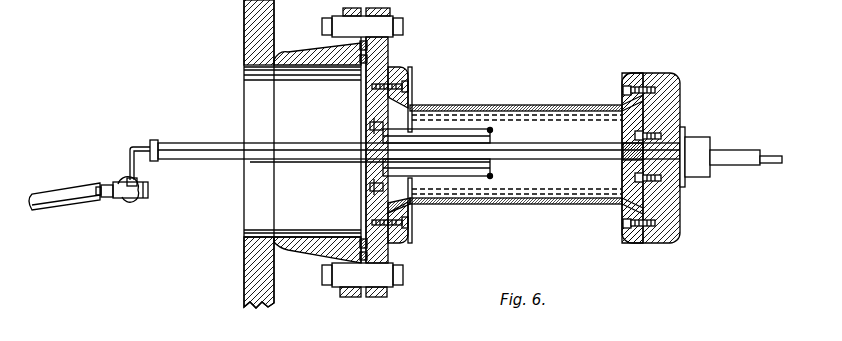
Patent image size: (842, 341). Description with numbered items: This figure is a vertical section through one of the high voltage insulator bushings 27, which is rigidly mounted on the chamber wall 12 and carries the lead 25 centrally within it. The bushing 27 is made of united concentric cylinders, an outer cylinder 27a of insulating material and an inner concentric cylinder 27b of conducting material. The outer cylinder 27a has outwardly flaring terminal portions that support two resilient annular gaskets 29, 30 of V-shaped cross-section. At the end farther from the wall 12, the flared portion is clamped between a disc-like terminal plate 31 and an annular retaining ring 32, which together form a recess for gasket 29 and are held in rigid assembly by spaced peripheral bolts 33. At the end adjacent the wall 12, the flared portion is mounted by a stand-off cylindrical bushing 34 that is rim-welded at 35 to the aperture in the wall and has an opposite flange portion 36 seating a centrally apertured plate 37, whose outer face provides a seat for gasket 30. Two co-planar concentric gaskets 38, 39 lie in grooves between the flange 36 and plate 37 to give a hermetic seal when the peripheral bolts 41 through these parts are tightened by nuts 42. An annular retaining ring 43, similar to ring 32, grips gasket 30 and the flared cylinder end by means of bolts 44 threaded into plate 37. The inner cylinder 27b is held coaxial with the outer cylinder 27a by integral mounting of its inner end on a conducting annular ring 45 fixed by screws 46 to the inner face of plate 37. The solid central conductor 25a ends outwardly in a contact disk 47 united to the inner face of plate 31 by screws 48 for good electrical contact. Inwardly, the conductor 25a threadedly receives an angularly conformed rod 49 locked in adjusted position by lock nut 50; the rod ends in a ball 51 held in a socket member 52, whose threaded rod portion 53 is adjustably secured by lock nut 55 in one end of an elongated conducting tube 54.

The chamber wall 12 is at (244, 272).
The lead 25 is at (735, 166).
The central conductor 25a is at (218, 160).
The insulator bushing 27 is at (502, 125).
The outer cylinder 27a is at (476, 105).
The inner concentric cylinder 27b is at (492, 131).
The resilient gasket 29 is at (636, 178).
The resilient gasket 30 is at (392, 200).
The terminal plate 31 is at (660, 72).
The annular retaining ring 32 is at (630, 72).
The bolts 33 is at (622, 90).
The stand-off cylindrical bushing 34 is at (306, 52).
The rim weld 35 is at (278, 248).
The flange portion 36 is at (350, 298).
The centrally apertured plate 37 is at (378, 298).
The gasket 38 is at (389, 58).
The gasket 39 is at (362, 50).
The bolts 41 is at (404, 26).
The nuts 42 is at (330, 290).
The annular retaining ring 43 is at (404, 238).
The bolts 44 is at (410, 222).
The annular ring 45 is at (369, 126).
The screws 46 is at (369, 186).
The contact disk 47 is at (630, 160).
The uniting screws 48 is at (634, 135).
The angularly conformed rod 49 is at (139, 147).
The lock nut 50 is at (156, 141).
The ball 51 is at (128, 180).
The socket member 52 is at (147, 196).
The threaded rod portion 53 is at (112, 199).
The conducting tube 54 is at (62, 185).
The lock nut 55 is at (104, 198).